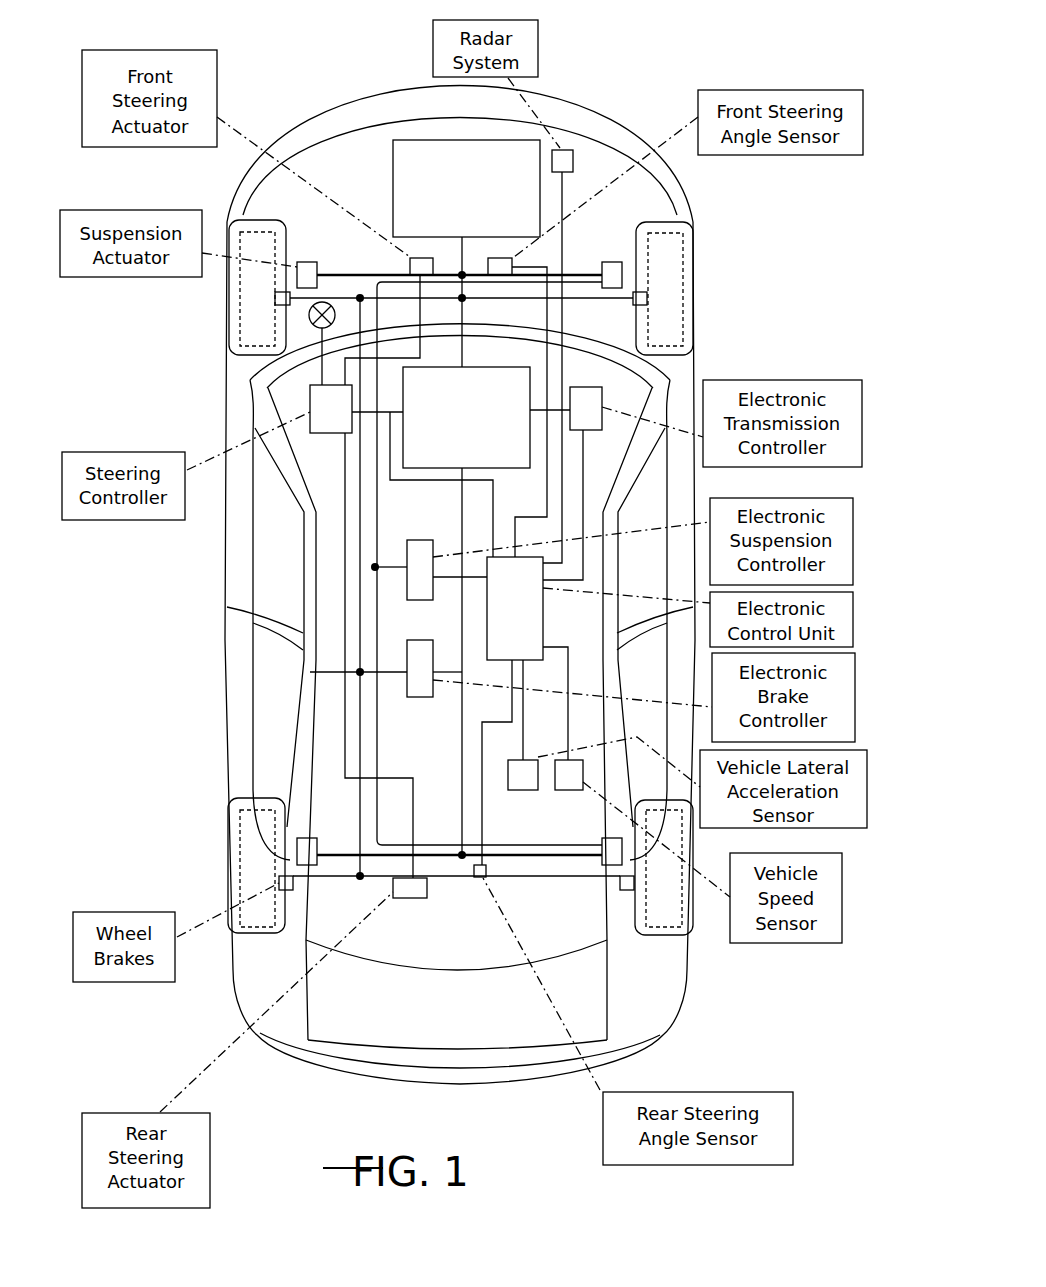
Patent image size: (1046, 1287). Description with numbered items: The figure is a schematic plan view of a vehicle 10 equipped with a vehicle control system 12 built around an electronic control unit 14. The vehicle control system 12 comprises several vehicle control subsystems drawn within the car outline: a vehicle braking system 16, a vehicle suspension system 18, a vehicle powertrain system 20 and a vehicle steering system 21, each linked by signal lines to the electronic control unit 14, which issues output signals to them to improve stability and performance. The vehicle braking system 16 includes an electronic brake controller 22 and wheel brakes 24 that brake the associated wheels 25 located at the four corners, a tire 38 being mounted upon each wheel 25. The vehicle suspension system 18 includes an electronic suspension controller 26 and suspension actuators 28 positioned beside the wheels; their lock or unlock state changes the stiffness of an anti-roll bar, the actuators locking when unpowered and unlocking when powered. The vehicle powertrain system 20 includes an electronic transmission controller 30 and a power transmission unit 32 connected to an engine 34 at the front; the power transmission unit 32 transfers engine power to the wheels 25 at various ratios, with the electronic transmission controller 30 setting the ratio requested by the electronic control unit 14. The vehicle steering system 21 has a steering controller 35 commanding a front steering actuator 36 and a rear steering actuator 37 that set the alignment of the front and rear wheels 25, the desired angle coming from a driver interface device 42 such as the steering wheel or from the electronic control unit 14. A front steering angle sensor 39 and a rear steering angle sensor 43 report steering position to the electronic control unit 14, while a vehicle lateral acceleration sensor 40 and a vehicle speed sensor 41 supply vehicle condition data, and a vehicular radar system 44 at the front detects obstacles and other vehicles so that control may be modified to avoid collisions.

The vehicle 10 is at (334, 72).
The vehicle control system 12 is at (597, 166).
The electronic control unit 14 is at (543, 620).
The vehicle braking system 16 is at (362, 628).
The vehicle suspension system 18 is at (377, 530).
The vehicle powertrain system 20 is at (464, 358).
The vehicle steering system 21 is at (310, 672).
The electronic brake controller 22 is at (417, 697).
The wheel brake 24 is at (275, 303).
The wheel 25 is at (240, 285).
The electronic suspension controller 26 is at (427, 540).
The suspension actuator 28 is at (320, 262).
The electronic transmission controller 30 is at (585, 385).
The power transmission unit 32 is at (466, 417).
The engine 34 is at (415, 182).
The steering controller 35 is at (343, 445).
The front steering actuator 36 is at (410, 263).
The rear steering actuator 37 is at (418, 898).
The tire 38 is at (247, 220).
The front steering angle sensor 39 is at (497, 258).
The vehicle lateral acceleration sensor 40 is at (523, 790).
The vehicle speed sensor 41 is at (568, 790).
The driver interface device 42 is at (248, 380).
The rear steering angle sensor 43 is at (482, 877).
The vehicular radar system 44 is at (568, 148).